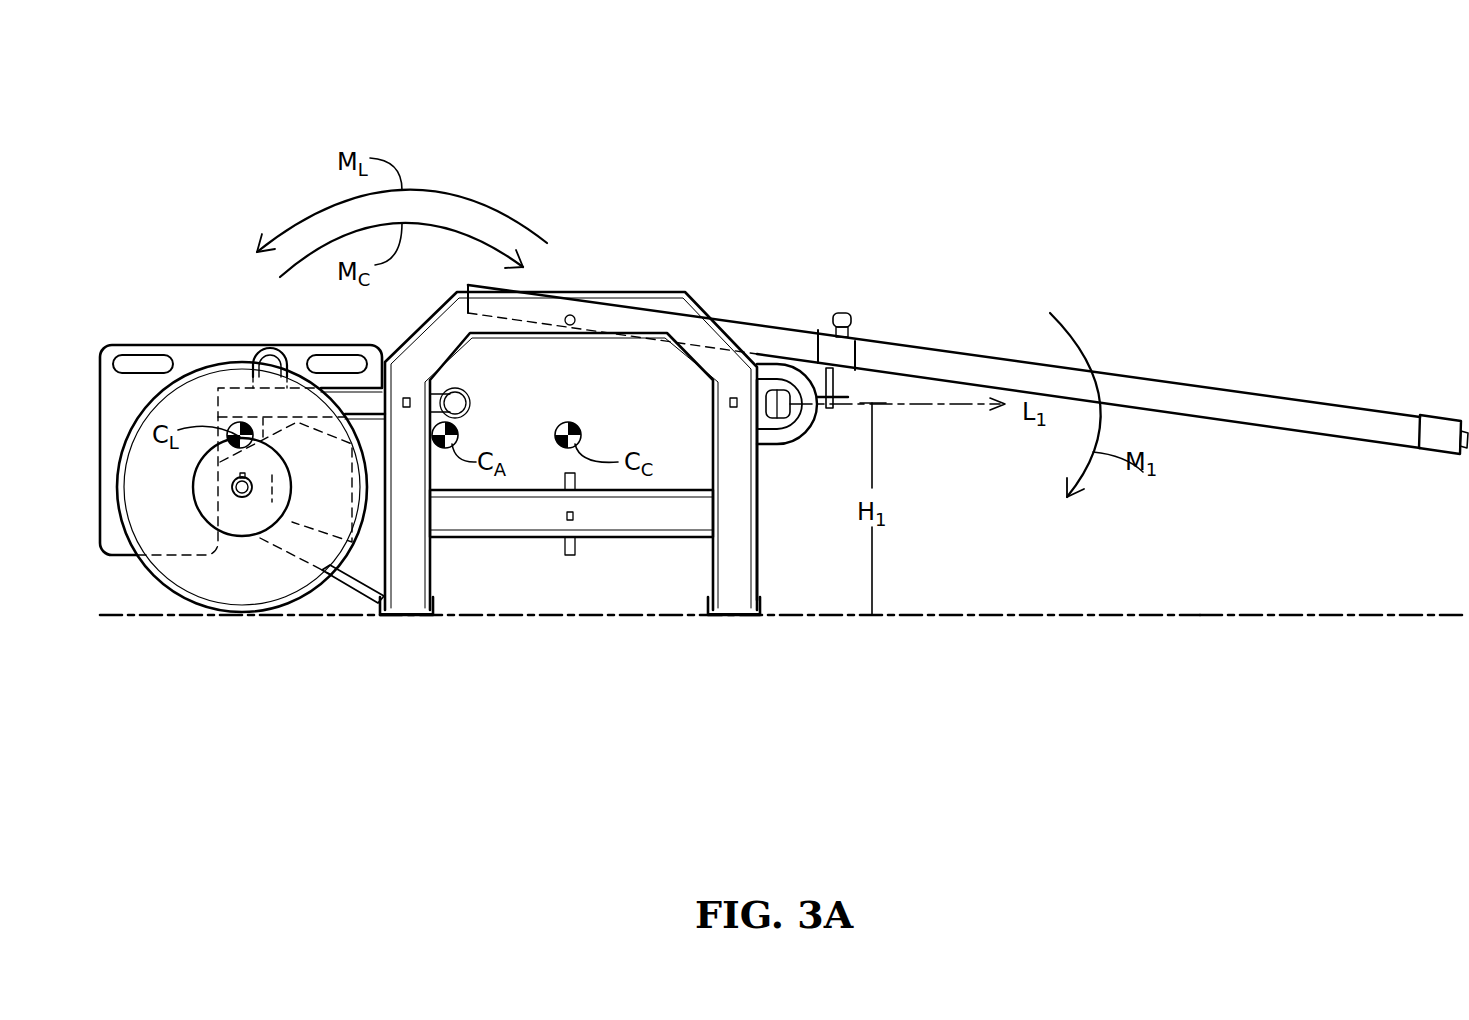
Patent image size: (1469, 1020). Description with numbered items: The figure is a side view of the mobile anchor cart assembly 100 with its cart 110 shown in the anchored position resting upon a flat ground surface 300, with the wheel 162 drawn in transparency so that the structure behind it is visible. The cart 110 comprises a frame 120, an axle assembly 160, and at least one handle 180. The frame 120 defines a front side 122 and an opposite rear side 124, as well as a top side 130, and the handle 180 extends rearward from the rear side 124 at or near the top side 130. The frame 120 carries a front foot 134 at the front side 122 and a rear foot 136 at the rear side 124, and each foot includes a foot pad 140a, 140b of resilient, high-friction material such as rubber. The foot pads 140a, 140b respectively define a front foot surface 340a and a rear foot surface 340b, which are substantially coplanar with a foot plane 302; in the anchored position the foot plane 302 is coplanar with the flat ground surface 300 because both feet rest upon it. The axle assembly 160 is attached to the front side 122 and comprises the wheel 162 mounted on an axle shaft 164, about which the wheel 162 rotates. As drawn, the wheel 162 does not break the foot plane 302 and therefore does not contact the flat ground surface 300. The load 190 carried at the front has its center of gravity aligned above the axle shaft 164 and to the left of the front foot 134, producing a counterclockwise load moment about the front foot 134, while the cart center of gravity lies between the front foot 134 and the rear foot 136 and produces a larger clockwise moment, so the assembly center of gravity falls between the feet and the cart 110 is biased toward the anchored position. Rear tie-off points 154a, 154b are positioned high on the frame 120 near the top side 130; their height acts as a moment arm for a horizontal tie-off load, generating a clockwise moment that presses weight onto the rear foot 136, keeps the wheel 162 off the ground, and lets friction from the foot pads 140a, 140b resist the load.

The mobile anchor cart assembly 100 is at (780, 103).
The cart 110 is at (677, 297).
The frame 120 is at (648, 297).
The top side 130 is at (600, 290).
The rear tie-off point 154a is at (762, 382).
The rear tie-off point 154b is at (788, 370).
The handle 180 is at (1315, 418).
The load 190 is at (180, 350).
The axle assembly 160 is at (180, 572).
The wheel 162 is at (203, 587).
The axle shaft 164 is at (242, 492).
The front side 122 is at (373, 578).
The rear side 124 is at (758, 562).
The front foot 134 is at (395, 600).
The rear foot 136 is at (745, 598).
The foot pad 140a is at (437, 598).
The foot pad 140b is at (693, 598).
The front foot surface 340a is at (413, 620).
The rear foot surface 340b is at (725, 620).
The flat ground surface 300 is at (1235, 610).
The foot plane 302 is at (1147, 622).